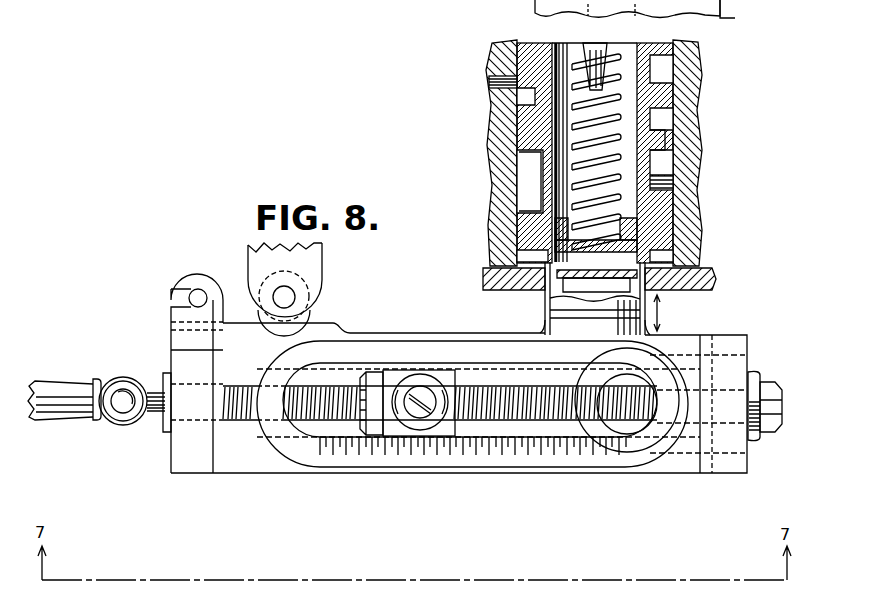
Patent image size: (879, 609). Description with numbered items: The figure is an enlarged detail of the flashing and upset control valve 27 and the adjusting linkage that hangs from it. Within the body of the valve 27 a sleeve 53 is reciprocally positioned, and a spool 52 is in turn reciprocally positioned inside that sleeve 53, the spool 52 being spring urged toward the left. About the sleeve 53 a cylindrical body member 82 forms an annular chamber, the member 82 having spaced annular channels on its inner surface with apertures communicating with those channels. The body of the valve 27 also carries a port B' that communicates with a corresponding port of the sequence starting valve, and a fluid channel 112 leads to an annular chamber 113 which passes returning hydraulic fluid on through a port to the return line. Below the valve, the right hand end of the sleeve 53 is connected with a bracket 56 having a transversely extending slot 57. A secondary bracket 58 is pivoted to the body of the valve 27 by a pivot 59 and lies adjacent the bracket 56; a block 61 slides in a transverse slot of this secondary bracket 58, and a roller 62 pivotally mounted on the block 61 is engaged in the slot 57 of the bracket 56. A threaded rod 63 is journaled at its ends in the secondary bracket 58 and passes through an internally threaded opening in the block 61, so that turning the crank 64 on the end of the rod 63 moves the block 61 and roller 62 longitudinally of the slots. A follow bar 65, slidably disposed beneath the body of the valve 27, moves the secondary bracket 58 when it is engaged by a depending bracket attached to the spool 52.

The flashing and upset control valve 27 is at (703, 16).
The spool 52 is at (593, 50).
The sleeve 53 is at (548, 131).
The cylindrical body member 82 is at (652, 140).
The fluid channel 112 is at (496, 86).
The annular chamber 113 is at (528, 180).
The port B' is at (701, 185).
The secondary bracket 58 is at (398, 332).
The follow bar 65 is at (262, 262).
The bracket 56 is at (375, 458).
The slot 57 is at (523, 436).
The pivot 59 is at (628, 432).
The block 61 is at (387, 385).
The roller 62 is at (437, 380).
The threaded rod 63 is at (157, 388).
The crank 64 is at (47, 393).